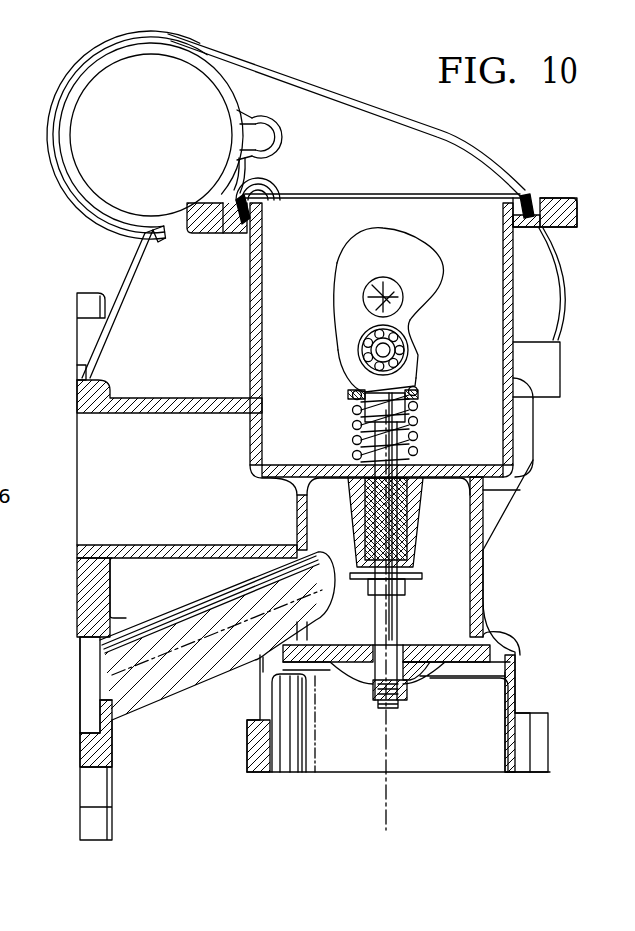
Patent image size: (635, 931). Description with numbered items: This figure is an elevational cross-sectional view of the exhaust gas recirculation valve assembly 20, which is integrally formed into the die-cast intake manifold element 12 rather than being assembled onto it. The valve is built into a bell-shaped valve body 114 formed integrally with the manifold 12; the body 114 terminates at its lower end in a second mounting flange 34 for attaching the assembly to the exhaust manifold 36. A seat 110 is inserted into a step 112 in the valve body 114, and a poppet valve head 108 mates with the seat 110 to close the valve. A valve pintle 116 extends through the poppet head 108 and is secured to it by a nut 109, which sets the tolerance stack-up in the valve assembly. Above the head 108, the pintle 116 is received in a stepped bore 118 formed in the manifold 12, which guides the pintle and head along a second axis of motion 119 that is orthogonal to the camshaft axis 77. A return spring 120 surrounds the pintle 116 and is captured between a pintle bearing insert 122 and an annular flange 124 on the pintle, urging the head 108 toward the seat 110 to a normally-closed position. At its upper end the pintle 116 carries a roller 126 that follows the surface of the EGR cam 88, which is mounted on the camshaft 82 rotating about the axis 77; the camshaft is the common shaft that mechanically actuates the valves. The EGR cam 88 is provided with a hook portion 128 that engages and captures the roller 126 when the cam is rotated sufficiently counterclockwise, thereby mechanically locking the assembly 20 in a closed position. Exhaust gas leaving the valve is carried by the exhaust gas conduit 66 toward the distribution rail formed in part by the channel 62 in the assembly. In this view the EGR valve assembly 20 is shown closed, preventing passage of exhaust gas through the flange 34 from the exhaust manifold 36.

The intake manifold element 12 is at (82, 588).
The EGR valve assembly 20 is at (574, 403).
The second mounting flange 34 is at (543, 752).
The exhaust manifold 36 is at (381, 799).
The channel 62 is at (86, 690).
The exhaust gas conduit 66 is at (168, 665).
The axis 77 is at (383, 297).
The camshaft 82 is at (392, 286).
The EGR cam 88 is at (405, 238).
The poppet valve head 108 is at (432, 688).
The nut 109 is at (367, 698).
The seat 110 is at (302, 688).
The step 112 is at (490, 648).
The bell-shaped valve body 114 is at (520, 652).
The valve pintle 116 is at (400, 618).
The stepped bore 118 is at (412, 560).
The second axis of motion 119 is at (390, 763).
The return spring 120 is at (440, 428).
The pintle bearing insert 122 is at (422, 486).
The annular flange 124 is at (350, 374).
The roller 126 is at (408, 340).
The hook portion 128 is at (356, 350).